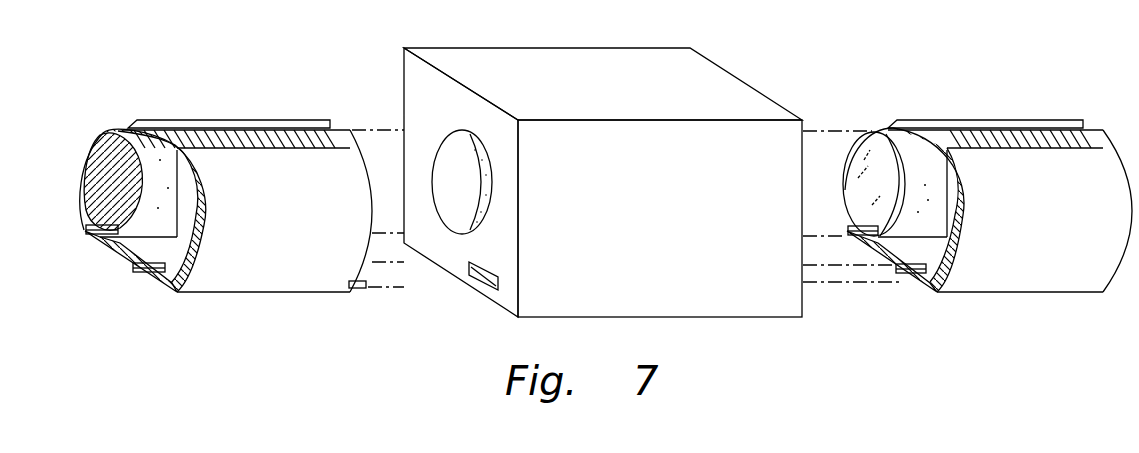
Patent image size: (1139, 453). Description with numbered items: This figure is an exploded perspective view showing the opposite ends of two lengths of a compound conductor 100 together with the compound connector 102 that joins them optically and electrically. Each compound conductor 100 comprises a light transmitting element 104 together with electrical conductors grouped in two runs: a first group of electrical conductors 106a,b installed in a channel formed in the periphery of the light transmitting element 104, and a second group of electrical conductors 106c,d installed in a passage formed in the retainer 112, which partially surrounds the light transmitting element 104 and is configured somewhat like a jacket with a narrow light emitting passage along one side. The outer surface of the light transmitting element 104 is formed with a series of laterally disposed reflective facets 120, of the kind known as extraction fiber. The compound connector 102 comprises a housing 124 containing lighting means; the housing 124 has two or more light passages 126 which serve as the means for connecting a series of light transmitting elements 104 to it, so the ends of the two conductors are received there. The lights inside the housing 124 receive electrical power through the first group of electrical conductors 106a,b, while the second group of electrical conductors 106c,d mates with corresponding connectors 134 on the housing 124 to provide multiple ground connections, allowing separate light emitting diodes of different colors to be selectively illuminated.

The compound conductor 100 is at (268, 323).
The compound connector 102 is at (733, 343).
The light transmitting element 104 is at (102, 131).
The electrical conductors 106a,b is at (96, 238).
The electrical conductors 106c,d is at (148, 274).
The retainer 112 is at (293, 225).
The reflective facets 120 is at (297, 128).
The housing 124 is at (672, 226).
The light passages 126 is at (448, 152).
The connectors 134 is at (488, 291).